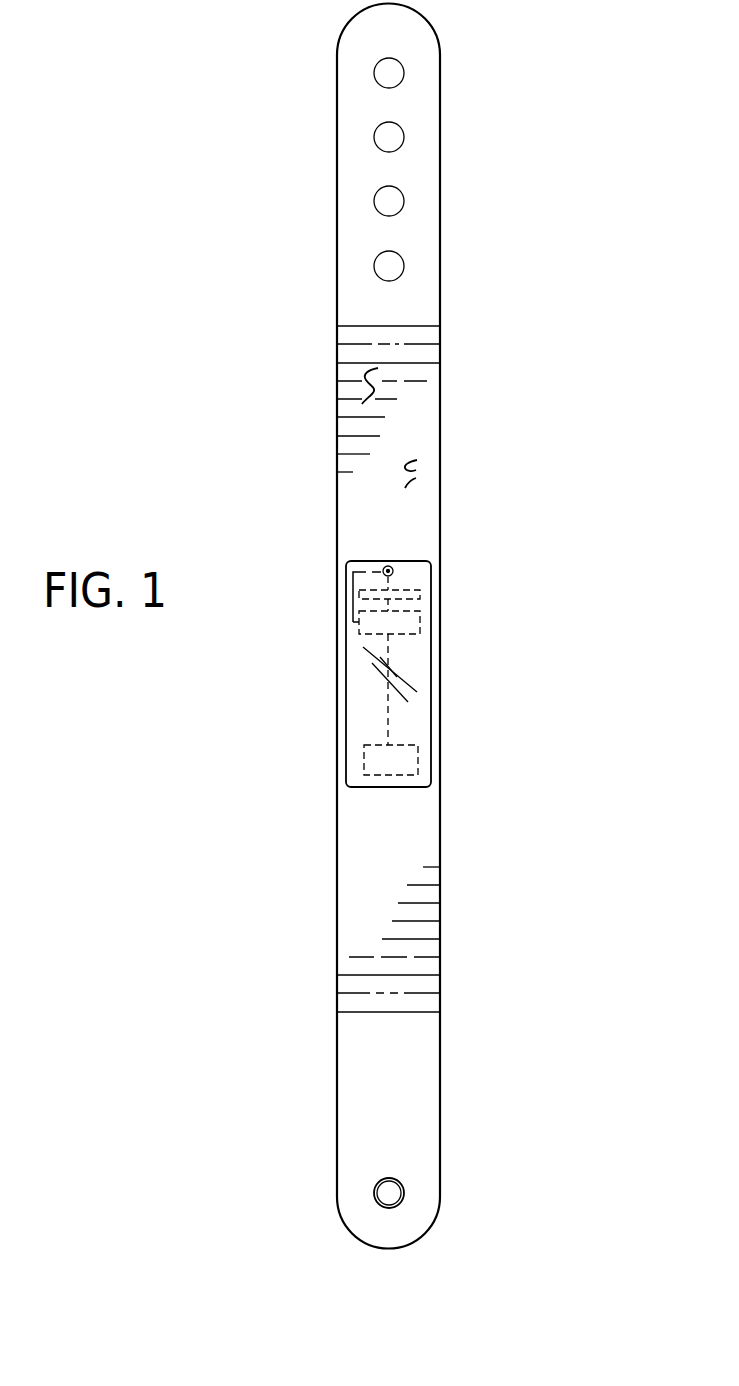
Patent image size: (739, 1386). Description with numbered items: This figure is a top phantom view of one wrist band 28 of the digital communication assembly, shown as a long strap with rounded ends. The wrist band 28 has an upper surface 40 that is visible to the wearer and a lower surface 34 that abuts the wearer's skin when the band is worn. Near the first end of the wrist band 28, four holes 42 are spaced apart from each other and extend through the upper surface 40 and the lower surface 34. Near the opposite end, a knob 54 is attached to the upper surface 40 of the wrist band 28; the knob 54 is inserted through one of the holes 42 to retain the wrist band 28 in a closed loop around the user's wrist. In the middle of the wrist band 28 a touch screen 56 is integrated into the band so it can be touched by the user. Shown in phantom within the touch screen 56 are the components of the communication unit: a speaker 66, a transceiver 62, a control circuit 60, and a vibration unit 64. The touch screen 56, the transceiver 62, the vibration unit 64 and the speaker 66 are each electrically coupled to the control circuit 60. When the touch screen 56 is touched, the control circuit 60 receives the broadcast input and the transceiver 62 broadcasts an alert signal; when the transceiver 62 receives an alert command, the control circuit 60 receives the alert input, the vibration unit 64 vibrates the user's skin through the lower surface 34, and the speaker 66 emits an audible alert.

The wrist band 28 is at (337, 102).
The holes 42 is at (428, 85).
The upper surface 40 is at (363, 388).
The lower surface 34 is at (423, 467).
The speaker 66 is at (388, 565).
The transceiver 62 is at (418, 590).
The control circuit 60 is at (413, 635).
The vibration unit 64 is at (418, 748).
The touch screen 56 is at (366, 790).
The knob 54 is at (385, 1177).